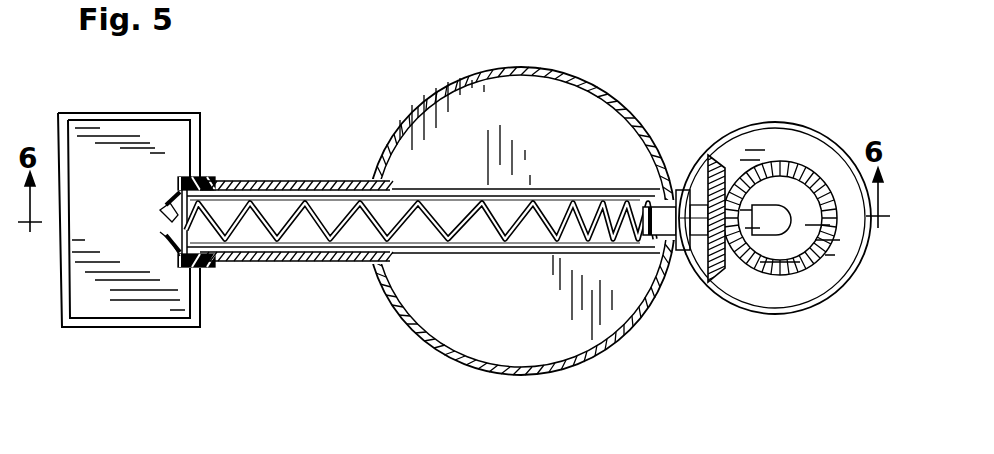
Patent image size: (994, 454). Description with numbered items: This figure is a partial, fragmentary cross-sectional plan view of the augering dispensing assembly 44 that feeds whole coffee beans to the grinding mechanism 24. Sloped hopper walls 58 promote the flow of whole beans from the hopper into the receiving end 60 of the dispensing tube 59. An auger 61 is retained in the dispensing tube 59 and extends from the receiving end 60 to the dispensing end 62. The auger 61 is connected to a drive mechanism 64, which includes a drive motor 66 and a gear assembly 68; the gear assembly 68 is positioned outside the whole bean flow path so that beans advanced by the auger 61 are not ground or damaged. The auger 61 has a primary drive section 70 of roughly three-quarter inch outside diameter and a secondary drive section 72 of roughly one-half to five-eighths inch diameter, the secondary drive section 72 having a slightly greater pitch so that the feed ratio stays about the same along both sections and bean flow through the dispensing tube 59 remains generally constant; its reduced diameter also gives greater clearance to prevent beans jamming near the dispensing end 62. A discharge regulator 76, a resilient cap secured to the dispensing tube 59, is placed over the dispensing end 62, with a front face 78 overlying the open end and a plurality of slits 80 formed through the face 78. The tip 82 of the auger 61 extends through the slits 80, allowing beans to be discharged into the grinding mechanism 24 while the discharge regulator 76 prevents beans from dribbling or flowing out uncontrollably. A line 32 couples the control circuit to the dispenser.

The grinding mechanism 24 is at (173, 330).
The line 32 is at (717, 303).
The dispensing assembly 44 is at (362, 70).
The sloped hopper walls 58 is at (437, 322).
The dispensing tube 59 is at (313, 262).
The receiving end 60 is at (490, 170).
The auger 61 is at (335, 210).
The dispensing end 62 is at (245, 165).
The drive mechanism 64 is at (770, 340).
The drive motor 66 is at (820, 303).
The gear assembly 68 is at (732, 150).
The primary drive section 70 is at (555, 200).
The secondary drive section 72 is at (262, 214).
The discharge regulator 76 is at (212, 270).
The front face 78 is at (163, 200).
The slits 80 is at (162, 213).
The tip 82 is at (163, 208).